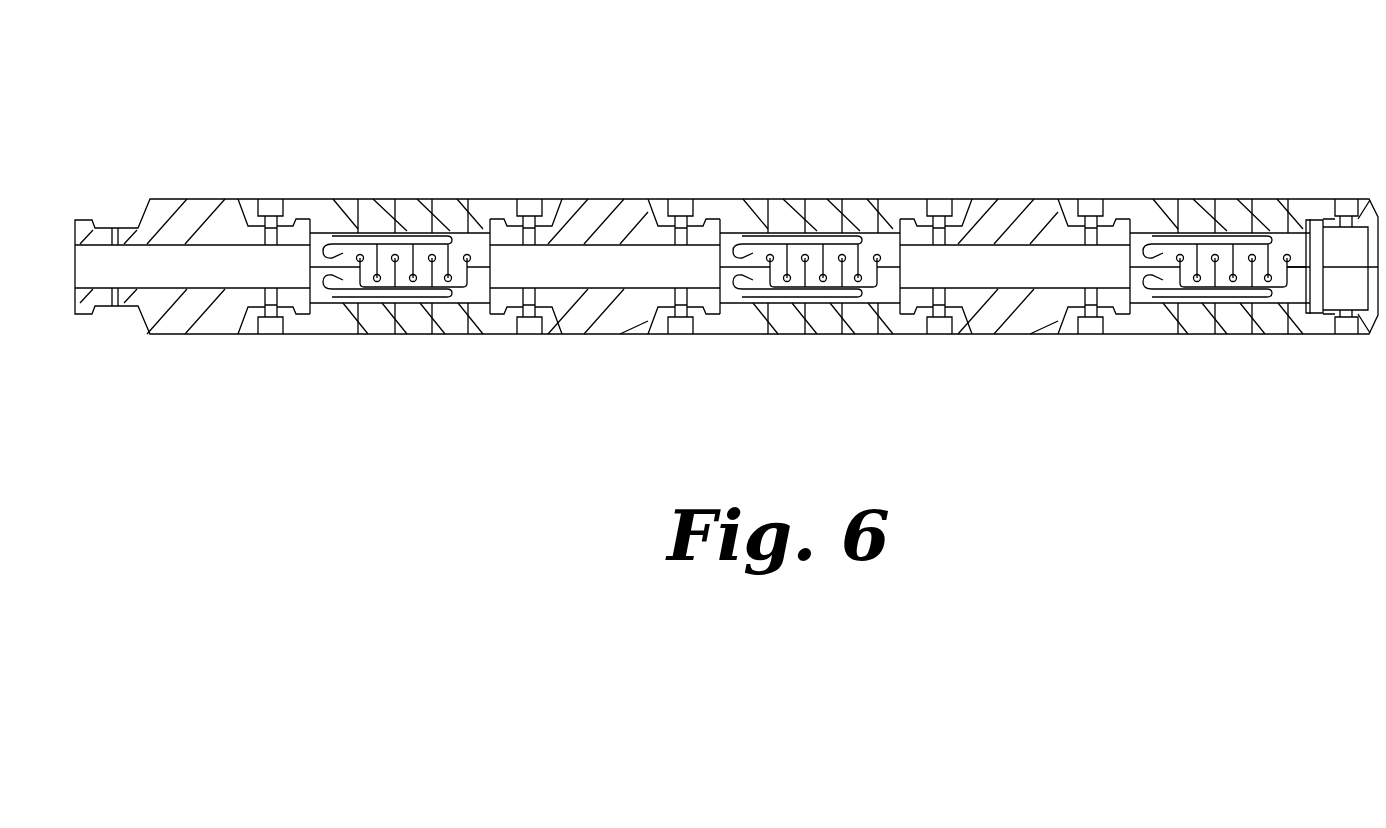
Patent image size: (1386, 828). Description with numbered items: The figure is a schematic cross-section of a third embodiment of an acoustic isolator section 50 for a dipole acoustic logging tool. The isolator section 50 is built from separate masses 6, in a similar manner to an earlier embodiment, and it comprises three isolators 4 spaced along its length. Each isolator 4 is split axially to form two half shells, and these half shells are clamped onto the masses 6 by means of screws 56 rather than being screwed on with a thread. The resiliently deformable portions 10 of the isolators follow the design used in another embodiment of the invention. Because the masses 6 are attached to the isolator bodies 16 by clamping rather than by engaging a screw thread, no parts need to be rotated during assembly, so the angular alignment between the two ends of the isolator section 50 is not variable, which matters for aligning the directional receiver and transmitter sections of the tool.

The isolator section 50 is at (182, 148).
The mass 6 is at (207, 323).
The isolator body 16 is at (202, 231).
The resiliently deformable portion 10 is at (406, 199).
The isolator 4 is at (387, 332).
The screw 56 is at (273, 203).